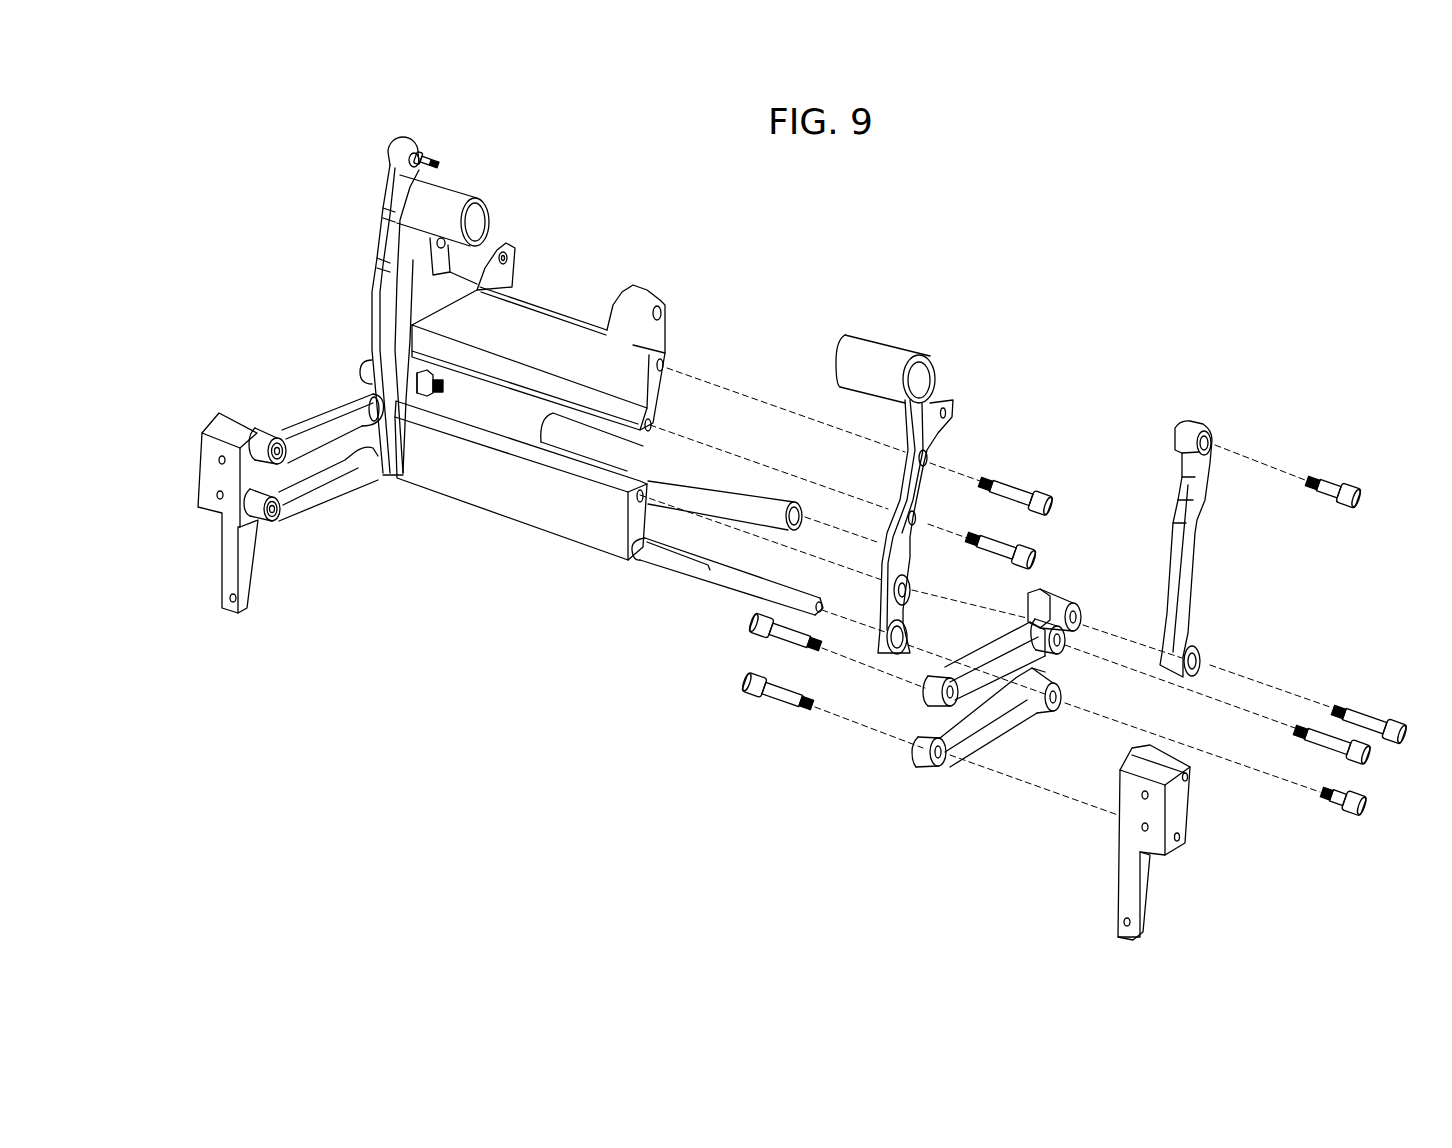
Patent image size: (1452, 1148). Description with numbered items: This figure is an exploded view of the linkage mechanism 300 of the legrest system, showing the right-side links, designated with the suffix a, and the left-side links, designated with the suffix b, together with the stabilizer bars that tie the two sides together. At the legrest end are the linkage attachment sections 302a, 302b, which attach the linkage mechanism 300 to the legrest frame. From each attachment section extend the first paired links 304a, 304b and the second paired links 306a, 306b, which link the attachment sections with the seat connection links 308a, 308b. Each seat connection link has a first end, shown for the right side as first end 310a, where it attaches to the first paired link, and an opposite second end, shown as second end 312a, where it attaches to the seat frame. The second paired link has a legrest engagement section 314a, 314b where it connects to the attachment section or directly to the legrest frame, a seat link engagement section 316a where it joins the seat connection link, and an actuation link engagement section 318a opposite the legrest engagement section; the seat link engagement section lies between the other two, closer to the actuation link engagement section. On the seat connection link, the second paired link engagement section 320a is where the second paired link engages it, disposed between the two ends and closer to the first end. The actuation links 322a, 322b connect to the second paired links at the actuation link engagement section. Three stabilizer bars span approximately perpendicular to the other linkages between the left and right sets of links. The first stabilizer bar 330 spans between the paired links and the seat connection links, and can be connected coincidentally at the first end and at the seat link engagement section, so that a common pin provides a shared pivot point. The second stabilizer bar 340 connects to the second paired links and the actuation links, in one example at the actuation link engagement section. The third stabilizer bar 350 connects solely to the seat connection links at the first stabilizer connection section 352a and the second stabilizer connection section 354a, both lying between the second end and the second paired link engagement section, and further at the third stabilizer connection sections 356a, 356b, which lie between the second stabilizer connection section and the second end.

The linkage mechanism 300 is at (992, 266).
The linkage attachment section 302a is at (1178, 812).
The linkage attachment section 302b is at (222, 435).
The first paired link 304a is at (922, 757).
The first paired link 304b is at (315, 493).
The second paired link 306a is at (990, 655).
The second paired link 306b is at (320, 417).
The seat connection link 308a is at (911, 549).
The seat connection link 308b is at (415, 441).
The first end 310a is at (885, 648).
The second end 312a is at (888, 360).
The legrest engagement section 314a is at (933, 695).
The legrest engagement section 314b is at (268, 437).
The seat link engagement section 316a is at (1060, 650).
The actuation link engagement section 318a is at (1055, 597).
The second paired link engagement section 320a is at (912, 578).
The actuation link 322a is at (1192, 553).
The actuation link 322b is at (382, 275).
The first stabilizer bar 330 is at (500, 483).
The second stabilizer bar 340 is at (718, 486).
The third stabilizer bar 350 is at (540, 338).
The first stabilizer connection section 352a is at (895, 510).
The second stabilizer connection section 354a is at (927, 453).
The third stabilizer connection section 356a is at (643, 295).
The third stabilizer connection section 356b is at (506, 250).